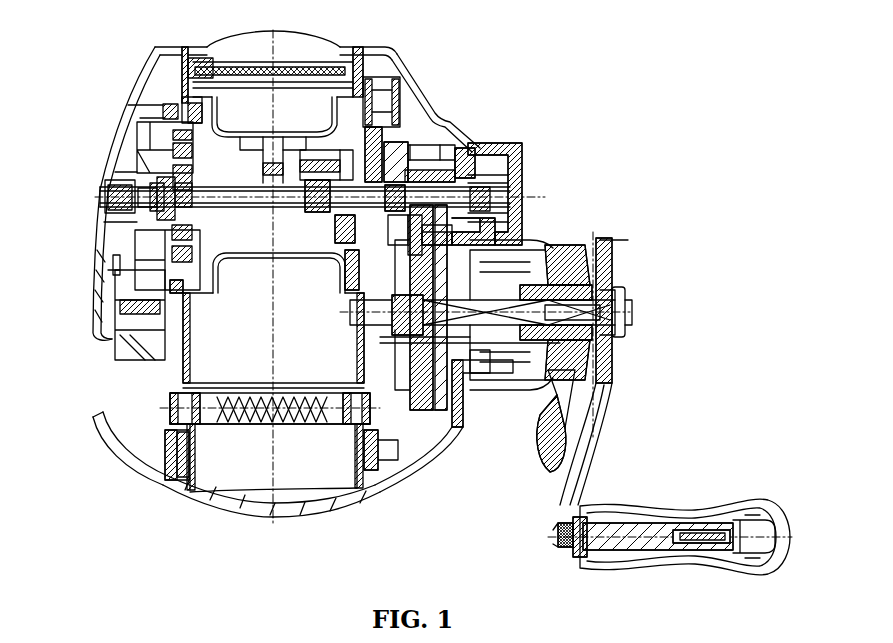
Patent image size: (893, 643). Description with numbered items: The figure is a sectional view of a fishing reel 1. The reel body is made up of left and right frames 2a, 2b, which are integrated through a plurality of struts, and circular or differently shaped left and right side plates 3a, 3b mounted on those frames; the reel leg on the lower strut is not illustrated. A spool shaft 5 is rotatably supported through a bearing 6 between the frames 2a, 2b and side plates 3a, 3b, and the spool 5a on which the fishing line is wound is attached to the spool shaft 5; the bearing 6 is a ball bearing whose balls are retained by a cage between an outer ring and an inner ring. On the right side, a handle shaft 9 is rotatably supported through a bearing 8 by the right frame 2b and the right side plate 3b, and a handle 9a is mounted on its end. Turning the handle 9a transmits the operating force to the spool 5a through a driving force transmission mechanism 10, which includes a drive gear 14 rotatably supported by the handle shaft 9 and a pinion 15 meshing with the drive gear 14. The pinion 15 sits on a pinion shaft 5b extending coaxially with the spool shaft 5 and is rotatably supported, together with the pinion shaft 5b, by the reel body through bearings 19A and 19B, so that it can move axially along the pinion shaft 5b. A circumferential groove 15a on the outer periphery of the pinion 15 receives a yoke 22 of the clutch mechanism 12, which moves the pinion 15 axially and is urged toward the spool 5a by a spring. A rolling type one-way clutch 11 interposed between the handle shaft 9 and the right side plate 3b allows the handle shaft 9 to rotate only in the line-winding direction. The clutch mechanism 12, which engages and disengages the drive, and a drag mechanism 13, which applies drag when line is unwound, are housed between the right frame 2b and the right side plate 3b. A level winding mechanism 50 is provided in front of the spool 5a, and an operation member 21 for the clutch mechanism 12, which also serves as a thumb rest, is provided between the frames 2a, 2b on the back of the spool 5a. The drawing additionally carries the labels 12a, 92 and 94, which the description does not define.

The fishing reel 1 is at (547, 80).
The left frame 2a is at (158, 481).
The right frame 2b is at (377, 490).
The left side plate 3a is at (85, 248).
The right side plate 3b is at (432, 118).
The spool shaft 5 is at (256, 222).
The spool 5a is at (228, 266).
The pinion shaft 5b is at (521, 180).
The bearing 6 is at (168, 236).
The bearing 8 is at (365, 330).
The handle shaft 9 is at (348, 321).
The handle 9a is at (602, 412).
The driving force transmission mechanism 10 is at (520, 213).
The rolling type one-way clutch 11 is at (492, 370).
The clutch mechanism 12 is at (428, 117).
The clutch operating member 12a is at (543, 475).
The drag mechanism 13 is at (456, 468).
The drive gear 14 is at (429, 450).
The pinion 15 is at (455, 143).
The circumferential groove 15a is at (352, 152).
The bearing 19A is at (335, 268).
The bearing 19B is at (505, 152).
The operation member 21 is at (292, 52).
The yoke 22 is at (413, 127).
The level winding mechanism 50 is at (265, 432).
The rotor 92 is at (350, 212).
The coil 94 is at (300, 165).